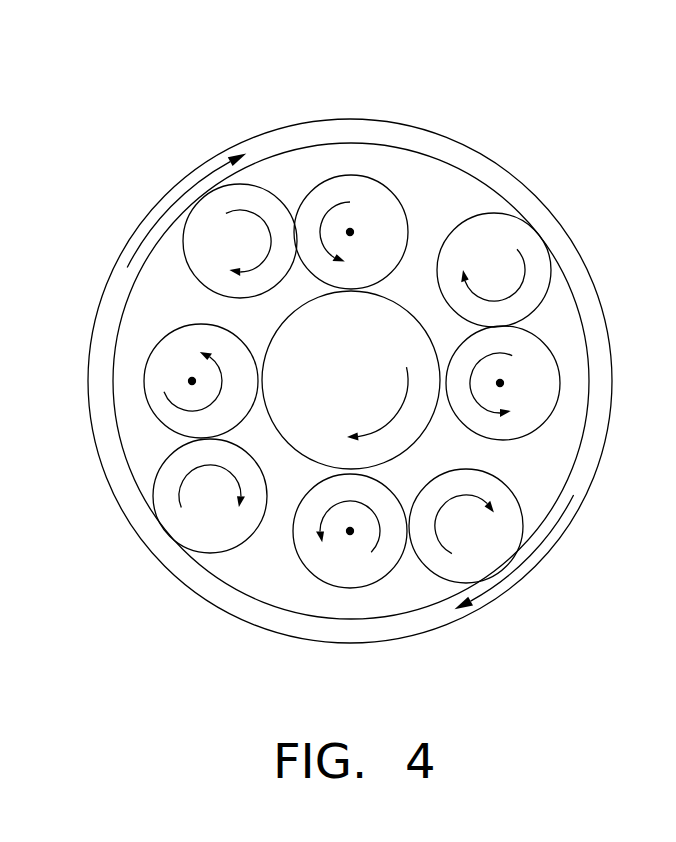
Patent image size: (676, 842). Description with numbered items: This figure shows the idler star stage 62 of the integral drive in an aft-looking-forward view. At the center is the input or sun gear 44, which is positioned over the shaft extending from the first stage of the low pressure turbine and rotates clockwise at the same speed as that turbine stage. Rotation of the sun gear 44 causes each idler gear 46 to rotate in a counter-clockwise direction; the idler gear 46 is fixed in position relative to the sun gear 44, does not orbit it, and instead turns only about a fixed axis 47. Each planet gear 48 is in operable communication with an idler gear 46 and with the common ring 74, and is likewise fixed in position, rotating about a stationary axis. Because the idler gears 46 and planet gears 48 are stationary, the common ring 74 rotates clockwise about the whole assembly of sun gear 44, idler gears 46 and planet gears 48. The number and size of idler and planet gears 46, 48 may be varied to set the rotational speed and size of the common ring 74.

The sun gear 44 is at (338, 392).
The idler gear 46 is at (353, 187).
The fixed axis 47 is at (351, 231).
The planet gear 48 is at (257, 198).
The idler star stage 62 is at (163, 96).
The common ring 74 is at (482, 170).